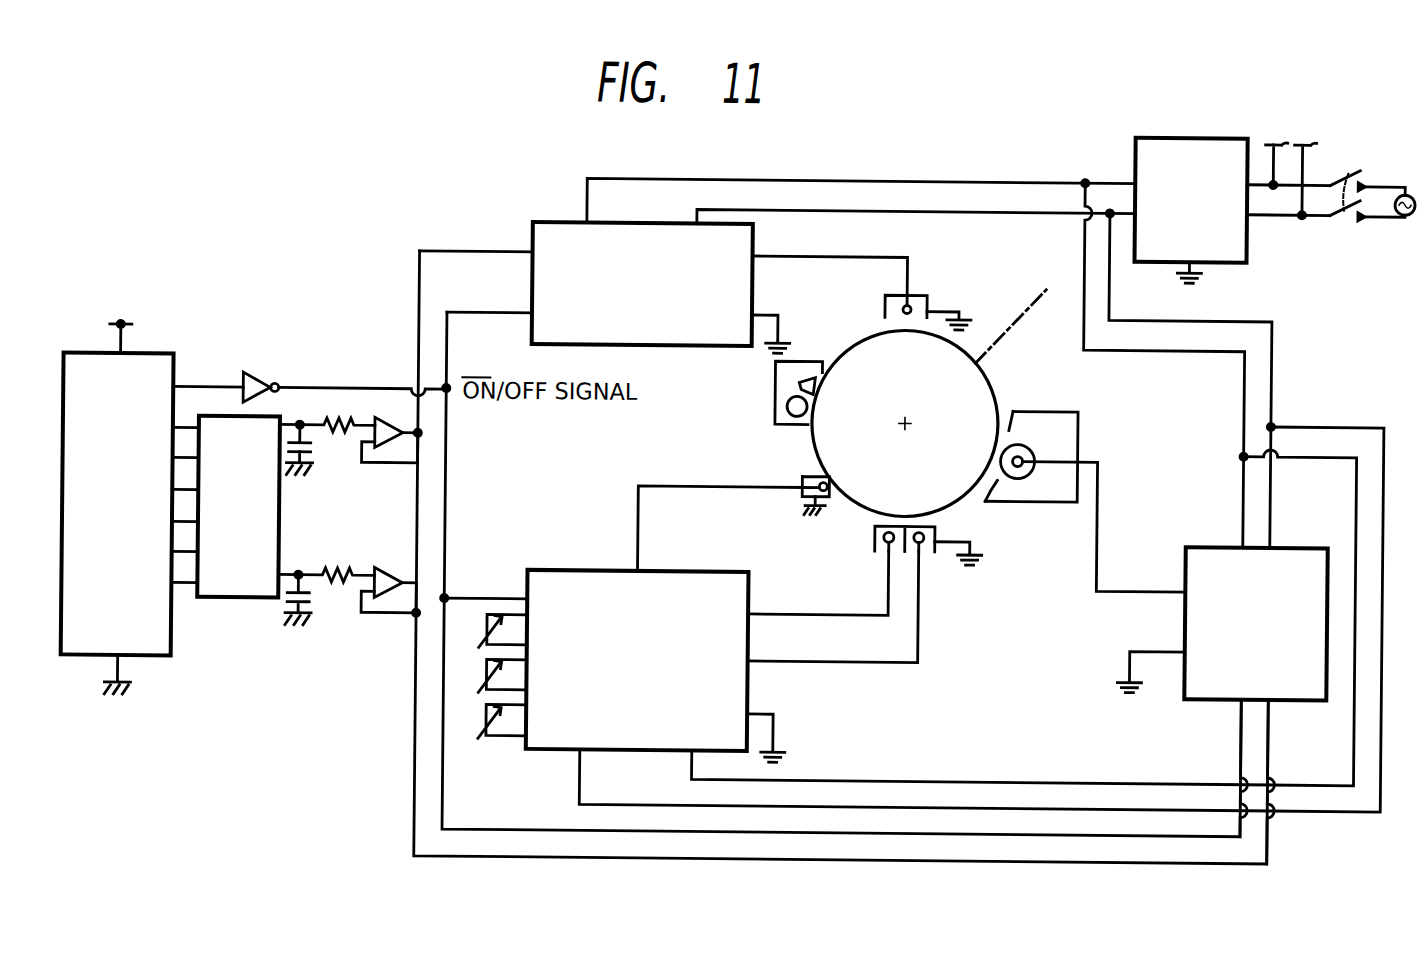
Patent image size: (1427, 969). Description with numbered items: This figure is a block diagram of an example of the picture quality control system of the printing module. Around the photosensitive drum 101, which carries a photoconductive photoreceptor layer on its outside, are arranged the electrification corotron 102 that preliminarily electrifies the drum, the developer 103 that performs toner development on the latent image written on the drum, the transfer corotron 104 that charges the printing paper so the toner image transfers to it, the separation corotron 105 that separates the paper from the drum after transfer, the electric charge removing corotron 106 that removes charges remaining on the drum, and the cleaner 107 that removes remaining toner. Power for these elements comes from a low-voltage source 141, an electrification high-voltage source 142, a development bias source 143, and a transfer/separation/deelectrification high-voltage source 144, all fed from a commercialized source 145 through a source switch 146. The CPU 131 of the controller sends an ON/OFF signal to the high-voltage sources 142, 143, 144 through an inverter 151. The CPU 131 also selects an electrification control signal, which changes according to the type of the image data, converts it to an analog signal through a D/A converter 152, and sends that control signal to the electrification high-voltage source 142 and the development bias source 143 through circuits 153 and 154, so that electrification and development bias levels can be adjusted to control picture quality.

The photosensitive drum 101 is at (992, 388).
The electrification corotron 102 is at (927, 302).
The developer 103 is at (1077, 444).
The transfer corotron 104 is at (927, 551).
The separation corotron 105 is at (875, 550).
The electric charge removing corotron 106 is at (802, 492).
The cleaner 107 is at (774, 412).
The CPU 131 is at (163, 661).
The low-voltage source 141 is at (1215, 134).
The electrification high-voltage source 142 is at (752, 238).
The development bias source 143 is at (1212, 541).
The transfer/separation/deelectrification high-voltage source 144 is at (540, 752).
The commercialized source 145 is at (1395, 212).
The source switch 146 is at (1335, 220).
The inverter 151 is at (248, 376).
The D/A converter 152 is at (262, 603).
The circuit 153 is at (383, 421).
The circuit 154 is at (388, 571).